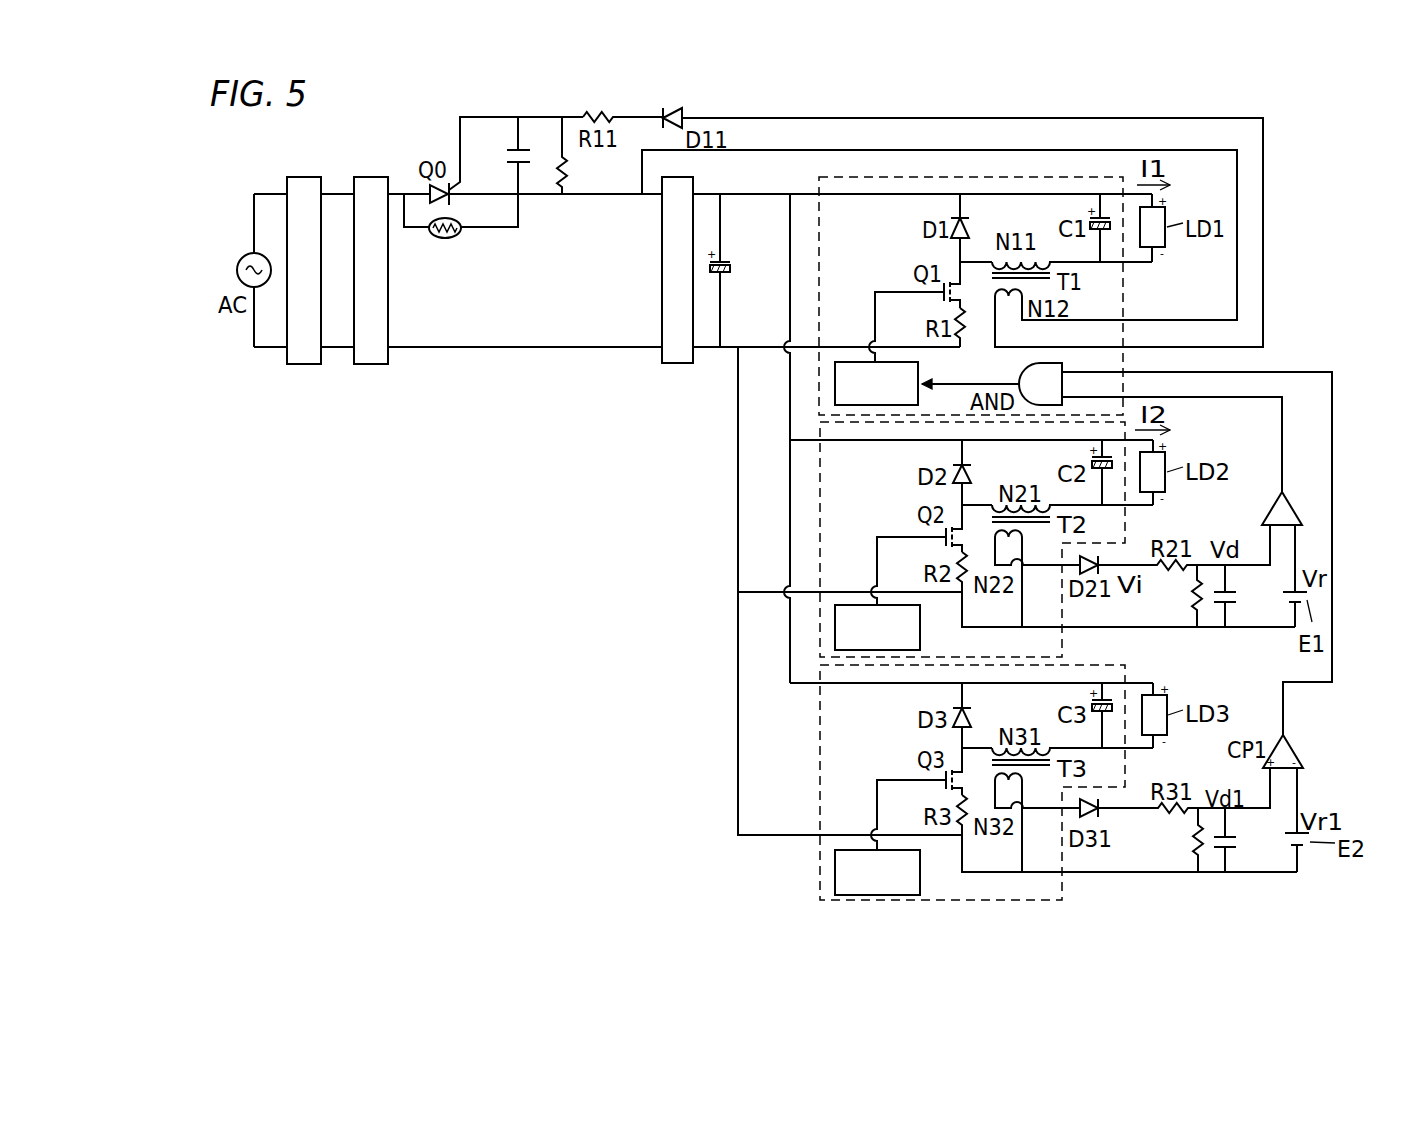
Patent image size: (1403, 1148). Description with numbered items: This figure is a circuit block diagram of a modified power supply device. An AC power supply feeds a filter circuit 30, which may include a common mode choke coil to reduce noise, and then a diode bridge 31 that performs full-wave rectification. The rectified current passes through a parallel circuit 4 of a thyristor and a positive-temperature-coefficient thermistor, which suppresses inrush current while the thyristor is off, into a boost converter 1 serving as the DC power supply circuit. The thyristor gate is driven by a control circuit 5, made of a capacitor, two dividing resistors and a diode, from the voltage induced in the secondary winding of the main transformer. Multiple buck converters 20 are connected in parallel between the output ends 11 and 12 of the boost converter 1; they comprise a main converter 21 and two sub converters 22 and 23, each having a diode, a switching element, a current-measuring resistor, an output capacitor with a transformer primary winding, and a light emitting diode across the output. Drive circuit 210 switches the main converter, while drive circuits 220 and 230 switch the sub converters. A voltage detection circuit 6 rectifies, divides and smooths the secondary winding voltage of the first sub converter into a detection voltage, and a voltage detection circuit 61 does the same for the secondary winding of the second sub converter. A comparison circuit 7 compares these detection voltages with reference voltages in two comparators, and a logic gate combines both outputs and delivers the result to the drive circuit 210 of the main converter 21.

The boost converter 1 is at (667, 282).
The parallel circuit 4 is at (485, 208).
The control circuit 5 is at (543, 173).
The voltage detection circuit 6 is at (1211, 612).
The comparison circuit 7 is at (1305, 495).
The output end 11 is at (703, 190).
The output end 12 is at (702, 348).
The buck converters 20 is at (885, 528).
The main converter 21 is at (818, 190).
The sub converter 22 is at (818, 523).
The sub converter 23 is at (818, 770).
The filter circuit 30 is at (312, 362).
The diode bridge 31 is at (379, 362).
The voltage detection circuit 61 is at (1242, 858).
The drive circuit 210 is at (910, 372).
The drive circuit 220 is at (912, 635).
The drive circuit 230 is at (912, 878).